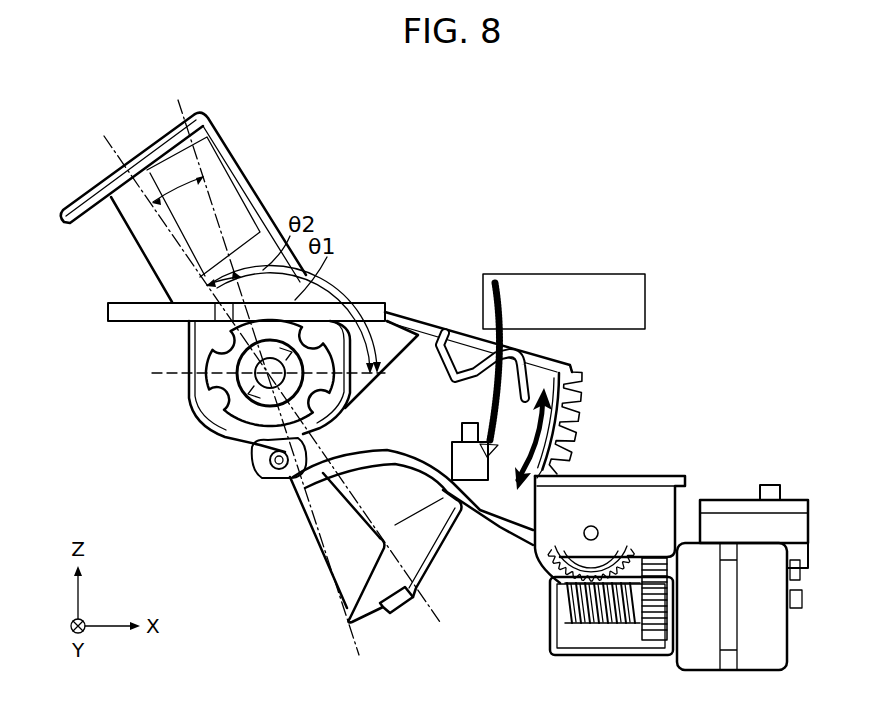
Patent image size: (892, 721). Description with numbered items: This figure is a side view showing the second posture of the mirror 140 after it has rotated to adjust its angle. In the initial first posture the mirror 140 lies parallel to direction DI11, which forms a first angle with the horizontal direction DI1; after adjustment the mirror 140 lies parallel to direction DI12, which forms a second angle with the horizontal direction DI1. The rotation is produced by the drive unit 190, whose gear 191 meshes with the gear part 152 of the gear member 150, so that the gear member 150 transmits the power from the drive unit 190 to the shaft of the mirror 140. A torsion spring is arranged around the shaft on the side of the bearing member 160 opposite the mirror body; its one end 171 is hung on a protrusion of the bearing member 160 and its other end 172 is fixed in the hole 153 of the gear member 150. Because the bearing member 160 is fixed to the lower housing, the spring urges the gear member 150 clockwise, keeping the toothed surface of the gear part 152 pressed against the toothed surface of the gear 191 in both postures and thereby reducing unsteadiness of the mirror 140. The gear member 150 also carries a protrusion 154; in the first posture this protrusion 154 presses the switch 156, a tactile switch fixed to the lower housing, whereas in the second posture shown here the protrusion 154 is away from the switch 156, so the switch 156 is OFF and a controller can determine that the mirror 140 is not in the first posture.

The mirror 140 is at (249, 195).
The gear member 150 is at (408, 325).
The gear part 152 is at (570, 450).
The hole 153 is at (278, 470).
The protrusion 154 is at (462, 330).
The switch 156 is at (462, 455).
The bearing member 160 is at (383, 305).
The one end 171 is at (342, 303).
The other end 172 is at (269, 462).
The drive unit 190 is at (665, 476).
The gear 191 is at (552, 585).
The horizontal direction DI1 is at (246, 374).
The direction DI11 is at (249, 362).
The direction DI12 is at (251, 367).